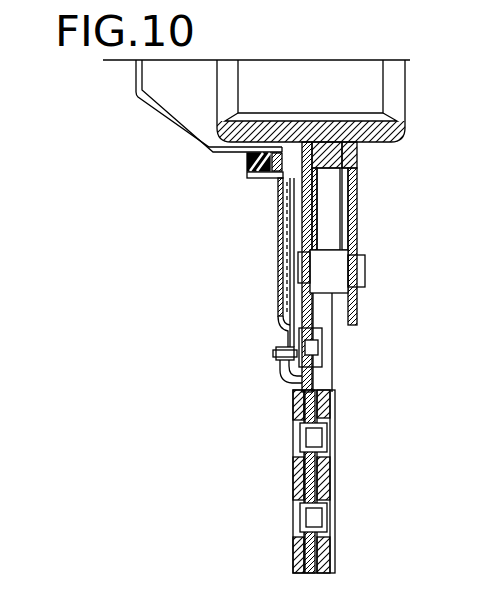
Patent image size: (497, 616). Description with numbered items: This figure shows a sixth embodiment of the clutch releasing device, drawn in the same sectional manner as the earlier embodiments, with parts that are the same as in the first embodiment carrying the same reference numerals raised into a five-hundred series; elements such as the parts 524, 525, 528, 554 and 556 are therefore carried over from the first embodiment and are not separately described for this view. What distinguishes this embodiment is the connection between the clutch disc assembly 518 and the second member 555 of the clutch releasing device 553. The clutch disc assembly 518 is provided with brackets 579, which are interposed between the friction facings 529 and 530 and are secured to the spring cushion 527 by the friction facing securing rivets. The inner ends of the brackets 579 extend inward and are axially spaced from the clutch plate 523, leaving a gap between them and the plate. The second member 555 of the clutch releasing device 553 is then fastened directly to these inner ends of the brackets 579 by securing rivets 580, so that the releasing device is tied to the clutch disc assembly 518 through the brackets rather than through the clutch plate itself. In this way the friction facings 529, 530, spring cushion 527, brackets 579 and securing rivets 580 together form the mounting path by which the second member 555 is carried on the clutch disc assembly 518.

The clutch disc assembly 518 is at (366, 156).
The clutch plate 523 is at (342, 237).
The valve rod 524 is at (357, 211).
The block 525 is at (350, 275).
The spring cushion 527 is at (320, 373).
The stopper 528 is at (322, 343).
The friction facing 529 is at (296, 487).
The friction facing 530 is at (330, 488).
The clutch releasing device 553 is at (246, 183).
The cover plate 554 is at (157, 108).
The second member 555 is at (278, 222).
The seal 556 is at (247, 162).
The bracket 579 is at (300, 450).
The securing rivet 580 is at (273, 352).